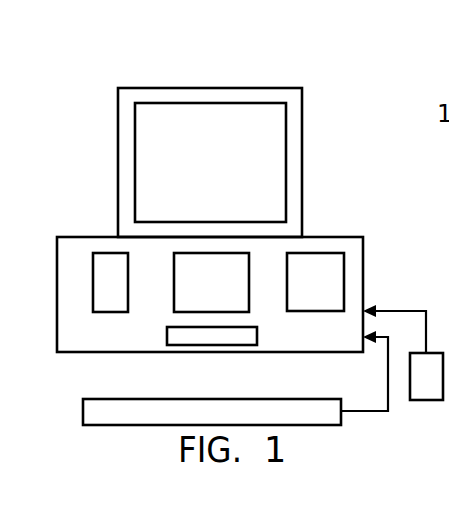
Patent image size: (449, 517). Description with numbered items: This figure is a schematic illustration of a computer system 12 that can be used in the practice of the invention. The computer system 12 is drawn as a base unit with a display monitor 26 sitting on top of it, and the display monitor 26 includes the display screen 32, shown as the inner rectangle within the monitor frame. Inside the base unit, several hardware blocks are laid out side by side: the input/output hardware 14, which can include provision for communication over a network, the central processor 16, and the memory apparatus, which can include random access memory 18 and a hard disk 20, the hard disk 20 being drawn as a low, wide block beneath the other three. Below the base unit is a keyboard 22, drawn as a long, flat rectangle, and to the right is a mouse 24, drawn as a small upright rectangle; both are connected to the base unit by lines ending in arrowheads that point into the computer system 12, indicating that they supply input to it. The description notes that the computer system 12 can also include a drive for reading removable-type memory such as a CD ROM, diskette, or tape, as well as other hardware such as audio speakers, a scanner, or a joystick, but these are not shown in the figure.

The computer system 12 is at (230, 72).
The input/output hardware 14 is at (110, 253).
The central processor 16 is at (184, 253).
The random access memory 18 is at (299, 251).
The hard disk 20 is at (173, 338).
The keyboard 22 is at (113, 410).
The mouse 24 is at (424, 388).
The display monitor 26 is at (302, 156).
The display screen 32 is at (160, 147).